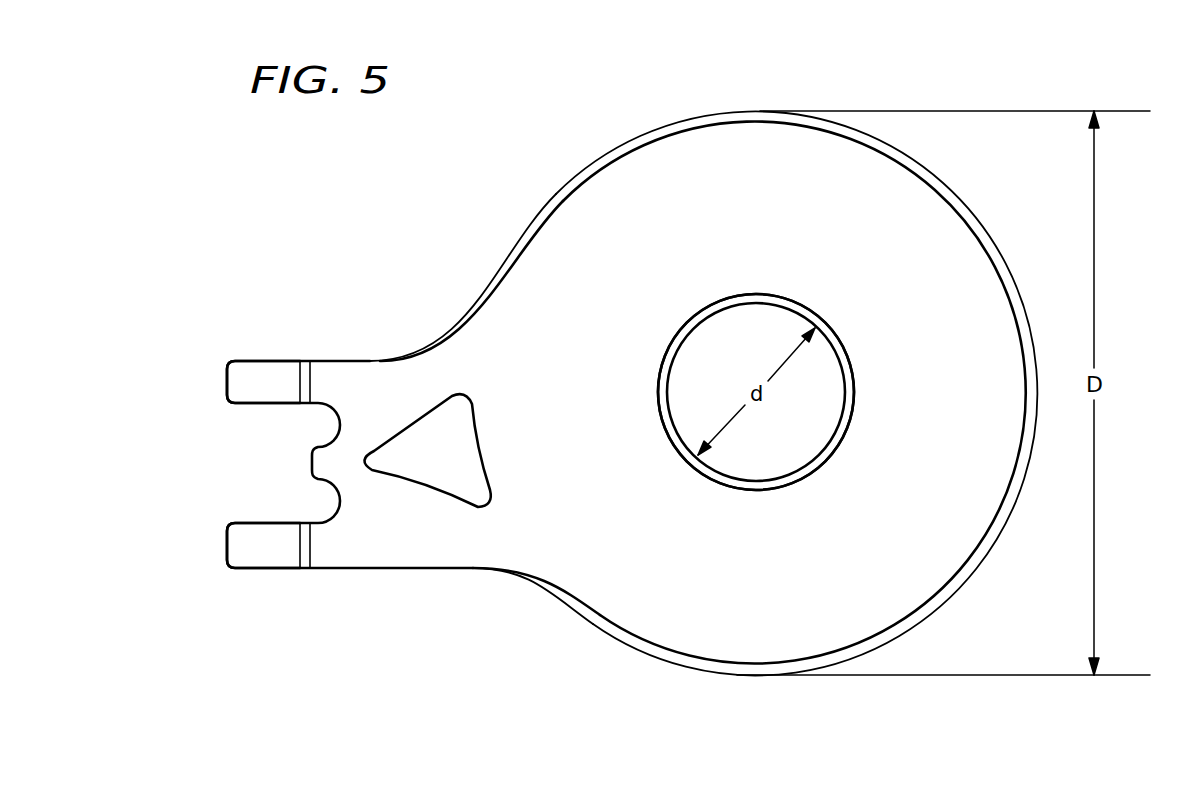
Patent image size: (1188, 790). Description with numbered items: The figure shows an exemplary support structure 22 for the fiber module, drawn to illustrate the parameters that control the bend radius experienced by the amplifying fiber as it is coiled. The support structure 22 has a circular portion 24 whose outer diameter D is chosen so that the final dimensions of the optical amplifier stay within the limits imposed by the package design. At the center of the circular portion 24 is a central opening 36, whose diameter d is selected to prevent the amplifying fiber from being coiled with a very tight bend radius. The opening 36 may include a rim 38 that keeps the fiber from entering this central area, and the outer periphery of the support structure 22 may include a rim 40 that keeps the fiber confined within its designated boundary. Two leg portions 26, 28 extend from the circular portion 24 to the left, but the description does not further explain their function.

The support structure 22 is at (448, 612).
The circular portion 24 is at (595, 160).
The first leg 26 is at (250, 544).
The second leg 28 is at (250, 382).
The central opening 36 is at (807, 435).
The rim 38 is at (720, 480).
The rim 40 is at (527, 238).